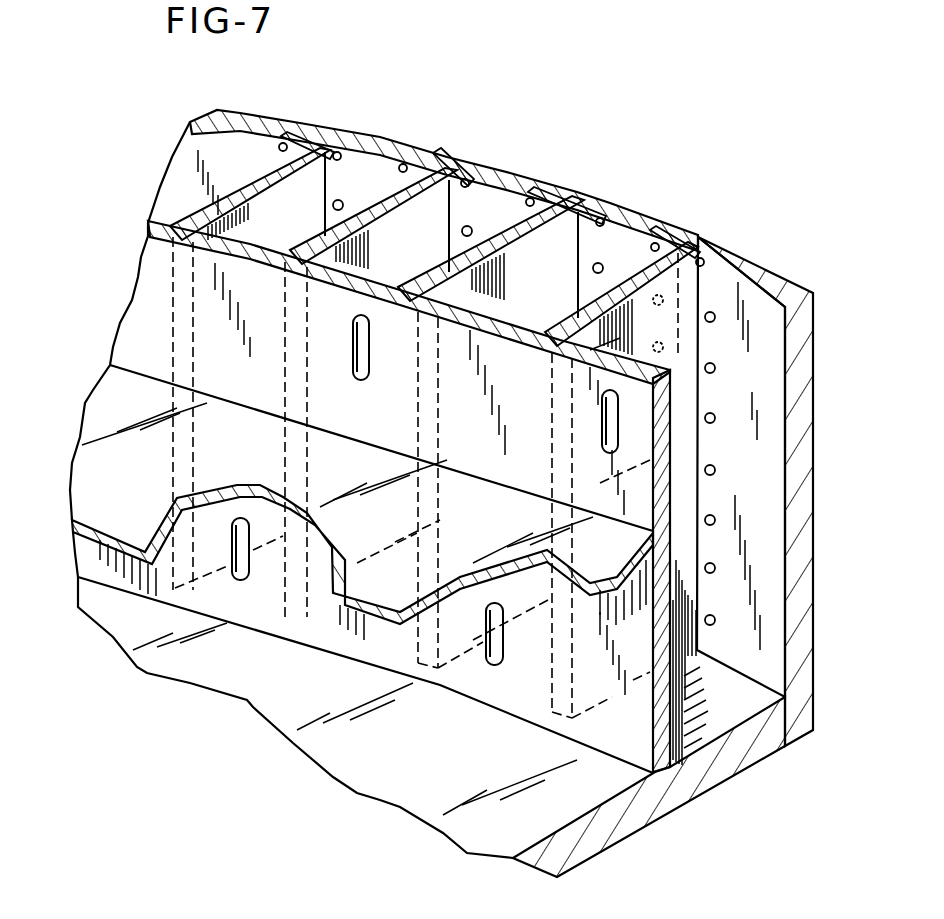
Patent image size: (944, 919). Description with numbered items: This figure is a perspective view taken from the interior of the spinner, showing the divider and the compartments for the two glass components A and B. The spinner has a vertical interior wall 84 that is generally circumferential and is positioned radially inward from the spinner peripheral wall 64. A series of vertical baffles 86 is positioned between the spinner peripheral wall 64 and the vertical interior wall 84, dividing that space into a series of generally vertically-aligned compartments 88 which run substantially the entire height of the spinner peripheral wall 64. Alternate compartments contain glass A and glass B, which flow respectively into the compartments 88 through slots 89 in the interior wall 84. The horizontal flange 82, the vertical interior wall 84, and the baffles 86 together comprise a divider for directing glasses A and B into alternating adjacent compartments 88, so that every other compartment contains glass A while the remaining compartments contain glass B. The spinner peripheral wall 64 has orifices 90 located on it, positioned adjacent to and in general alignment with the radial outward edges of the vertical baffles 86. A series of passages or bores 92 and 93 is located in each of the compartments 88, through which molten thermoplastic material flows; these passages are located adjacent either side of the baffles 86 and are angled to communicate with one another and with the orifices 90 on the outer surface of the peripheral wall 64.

The spinner peripheral wall 64 is at (813, 425).
The horizontal flange 82 is at (105, 422).
The vertical interior wall 84 is at (147, 219).
The vertical baffles 86 is at (227, 195).
The compartments 88 is at (378, 258).
The slots 89 is at (360, 380).
The orifices 90 is at (328, 135).
The passages or bores 92 is at (288, 138).
The passages or bores 93 is at (343, 147).